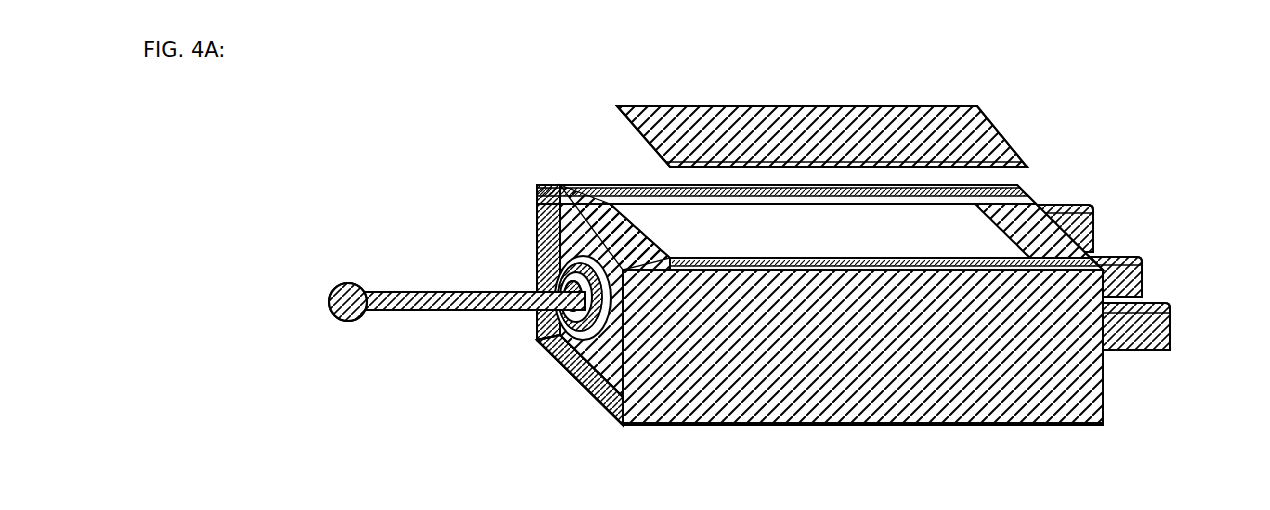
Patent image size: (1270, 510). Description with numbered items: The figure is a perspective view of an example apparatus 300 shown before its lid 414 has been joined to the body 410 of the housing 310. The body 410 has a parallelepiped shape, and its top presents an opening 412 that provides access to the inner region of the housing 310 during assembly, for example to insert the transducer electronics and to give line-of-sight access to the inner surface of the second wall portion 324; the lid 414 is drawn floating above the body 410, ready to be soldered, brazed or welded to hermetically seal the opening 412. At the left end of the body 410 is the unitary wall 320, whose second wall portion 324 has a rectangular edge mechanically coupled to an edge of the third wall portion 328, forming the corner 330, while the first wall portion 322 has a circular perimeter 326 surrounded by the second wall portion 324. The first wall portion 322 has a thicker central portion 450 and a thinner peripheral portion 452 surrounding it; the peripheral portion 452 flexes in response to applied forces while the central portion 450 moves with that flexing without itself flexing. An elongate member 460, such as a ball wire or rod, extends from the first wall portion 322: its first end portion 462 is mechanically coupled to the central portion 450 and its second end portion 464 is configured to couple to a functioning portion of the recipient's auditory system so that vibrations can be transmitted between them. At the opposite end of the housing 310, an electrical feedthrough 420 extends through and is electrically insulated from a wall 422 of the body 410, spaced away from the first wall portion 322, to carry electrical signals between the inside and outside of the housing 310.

The apparatus 300 is at (1157, 98).
The housing 310 is at (1055, 425).
The unitary wall 320 is at (522, 332).
The first wall portion 322 is at (550, 345).
The second wall portion 324 is at (535, 214).
The circular perimeter 326 is at (578, 390).
The third wall portion 328 is at (727, 412).
The corner 330 is at (600, 343).
The body 410 is at (958, 228).
The opening 412 is at (988, 185).
The lid 414 is at (988, 117).
The electrical feedthrough 420 is at (1133, 258).
The wall 422 is at (1105, 388).
The central portion 450 is at (583, 258).
The peripheral portion 452 is at (597, 268).
The elongate member 460 is at (407, 291).
The first end portion 462 is at (535, 260).
The second end portion 464 is at (333, 292).